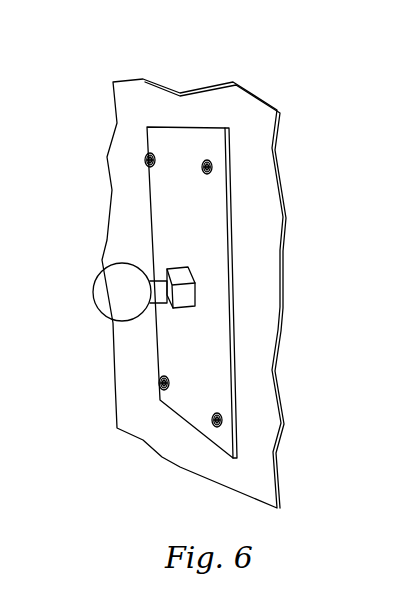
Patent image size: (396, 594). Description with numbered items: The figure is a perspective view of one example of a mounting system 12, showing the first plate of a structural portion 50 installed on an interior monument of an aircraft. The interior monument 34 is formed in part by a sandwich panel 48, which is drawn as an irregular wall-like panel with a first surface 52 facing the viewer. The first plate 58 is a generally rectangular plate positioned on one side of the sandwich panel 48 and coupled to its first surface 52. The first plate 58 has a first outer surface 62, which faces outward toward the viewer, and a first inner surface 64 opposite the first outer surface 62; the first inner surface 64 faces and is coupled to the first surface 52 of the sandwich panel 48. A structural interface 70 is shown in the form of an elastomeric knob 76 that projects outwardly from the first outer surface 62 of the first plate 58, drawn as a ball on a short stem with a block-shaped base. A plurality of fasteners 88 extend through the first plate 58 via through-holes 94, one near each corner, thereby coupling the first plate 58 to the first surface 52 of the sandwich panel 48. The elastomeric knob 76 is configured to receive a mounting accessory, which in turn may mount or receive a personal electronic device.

The mounting system 12 is at (315, 84).
The interior monument 34 is at (313, 180).
The sandwich panel 48 is at (302, 250).
The structural portion 50 is at (72, 238).
The first surface 52 is at (263, 286).
The first plate 58 is at (147, 222).
The first outer surface 62 is at (202, 356).
The first inner surface 64 is at (238, 383).
The structural interface 70 is at (85, 288).
The elastomeric knob 76 is at (93, 309).
The fasteners 88 is at (145, 160).
The through-holes 94 is at (207, 174).